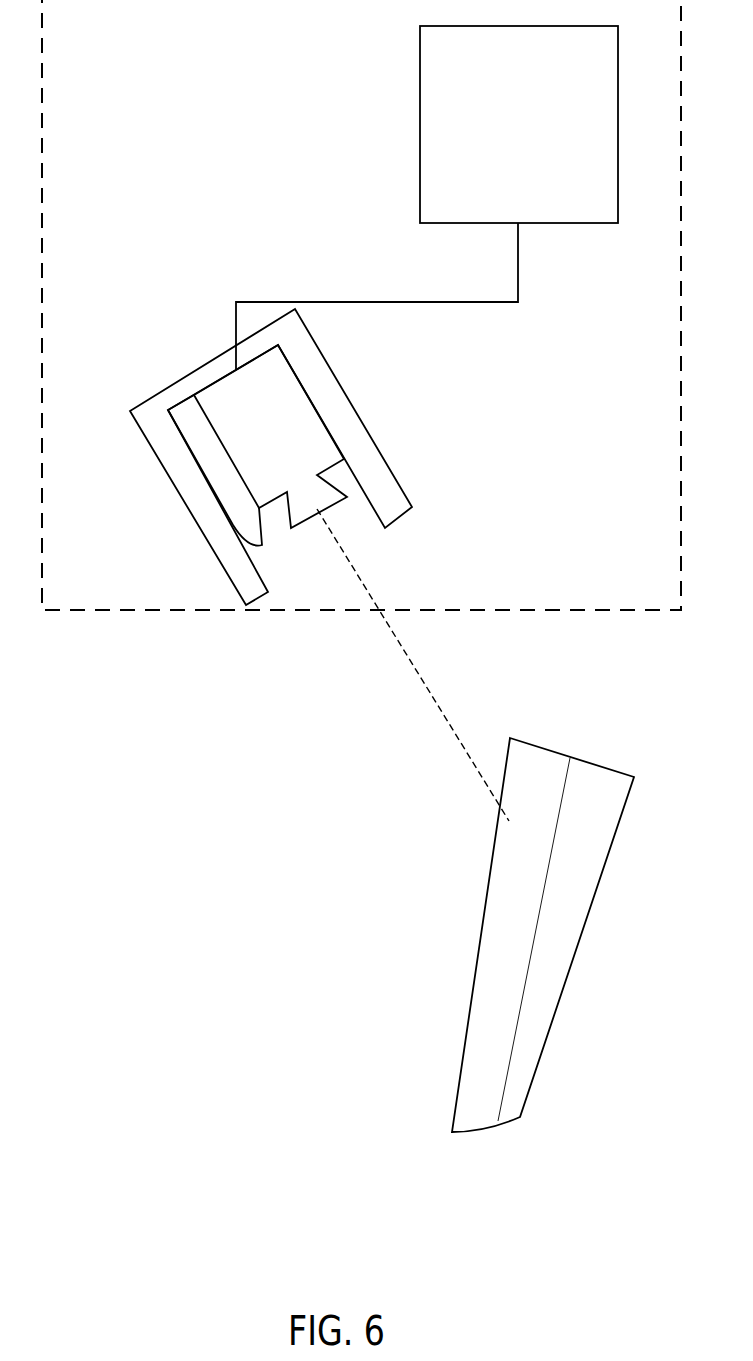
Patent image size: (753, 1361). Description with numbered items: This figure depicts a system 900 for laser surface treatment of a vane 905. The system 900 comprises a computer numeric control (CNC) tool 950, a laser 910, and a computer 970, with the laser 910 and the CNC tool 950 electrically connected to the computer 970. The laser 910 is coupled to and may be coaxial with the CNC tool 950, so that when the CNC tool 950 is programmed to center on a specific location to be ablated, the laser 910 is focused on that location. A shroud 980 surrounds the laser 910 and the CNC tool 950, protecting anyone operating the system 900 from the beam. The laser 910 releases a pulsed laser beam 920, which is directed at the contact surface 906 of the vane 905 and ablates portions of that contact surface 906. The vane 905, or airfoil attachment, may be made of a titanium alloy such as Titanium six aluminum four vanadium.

The system 900 is at (202, 167).
The computer 970 is at (537, 136).
The shroud 980 is at (172, 447).
The computer numeric control (CNC) tool 950 is at (287, 402).
The laser 910 is at (227, 525).
The pulsed laser beam 920 is at (377, 607).
The vane 905 is at (530, 788).
The contact surface 906 is at (507, 853).